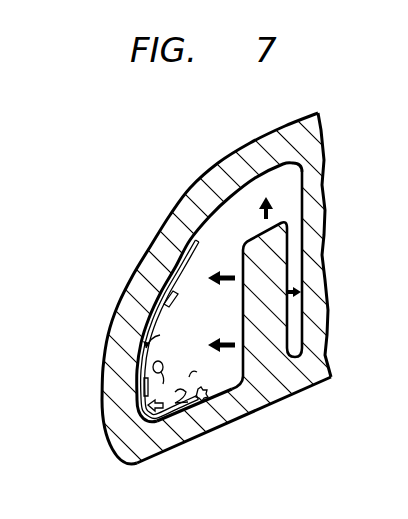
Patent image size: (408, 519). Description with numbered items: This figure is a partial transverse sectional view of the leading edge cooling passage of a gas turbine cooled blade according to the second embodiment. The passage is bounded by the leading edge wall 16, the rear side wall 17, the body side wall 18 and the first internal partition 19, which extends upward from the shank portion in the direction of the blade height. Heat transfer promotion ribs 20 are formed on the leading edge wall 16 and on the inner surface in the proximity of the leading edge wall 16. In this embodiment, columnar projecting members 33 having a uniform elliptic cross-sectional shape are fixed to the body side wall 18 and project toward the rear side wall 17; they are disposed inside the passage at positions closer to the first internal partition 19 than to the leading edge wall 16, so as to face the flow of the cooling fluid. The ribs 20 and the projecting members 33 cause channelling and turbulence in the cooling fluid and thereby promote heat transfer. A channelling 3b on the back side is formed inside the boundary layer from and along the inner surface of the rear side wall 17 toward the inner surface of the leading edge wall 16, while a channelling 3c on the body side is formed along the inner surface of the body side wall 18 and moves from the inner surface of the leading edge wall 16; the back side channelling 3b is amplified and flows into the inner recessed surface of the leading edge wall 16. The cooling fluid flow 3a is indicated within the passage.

The liner strip 3a is at (227, 268).
The channelling on the back side 3b is at (141, 386).
The channelling on the body side 3c is at (203, 400).
The leading edge wall 16 is at (130, 438).
The rear side wall 17 is at (165, 250).
The body side wall 18 is at (223, 411).
The first internal partition 19 is at (312, 237).
The heat transfer promotion ribs 20 is at (165, 305).
The columnar projecting members 33 is at (287, 390).